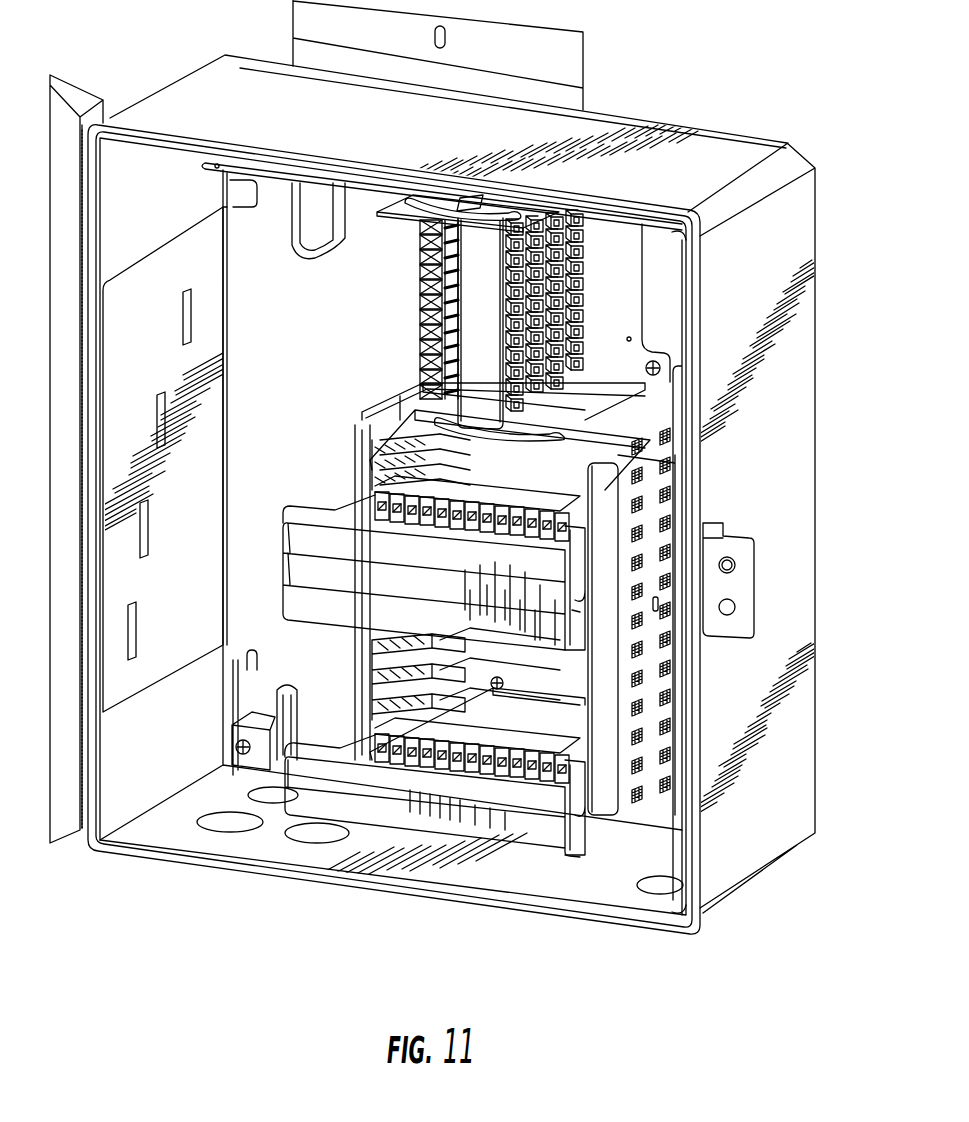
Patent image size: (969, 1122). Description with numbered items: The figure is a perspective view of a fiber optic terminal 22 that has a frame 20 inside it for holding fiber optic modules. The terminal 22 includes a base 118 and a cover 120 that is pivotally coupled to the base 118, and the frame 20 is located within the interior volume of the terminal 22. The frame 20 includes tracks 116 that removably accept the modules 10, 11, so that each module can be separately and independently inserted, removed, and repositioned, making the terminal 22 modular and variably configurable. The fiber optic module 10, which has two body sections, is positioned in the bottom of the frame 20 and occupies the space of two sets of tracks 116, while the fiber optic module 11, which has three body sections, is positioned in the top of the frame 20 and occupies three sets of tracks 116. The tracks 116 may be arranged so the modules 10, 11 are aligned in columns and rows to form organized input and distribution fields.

The fiber optic module 10 is at (331, 742).
The fiber optic module 11 is at (307, 498).
The frame 20 is at (623, 463).
The fiber optic terminal 22 is at (680, 117).
The tracks 116 is at (373, 480).
The base 118 is at (813, 260).
The cover 120 is at (62, 100).